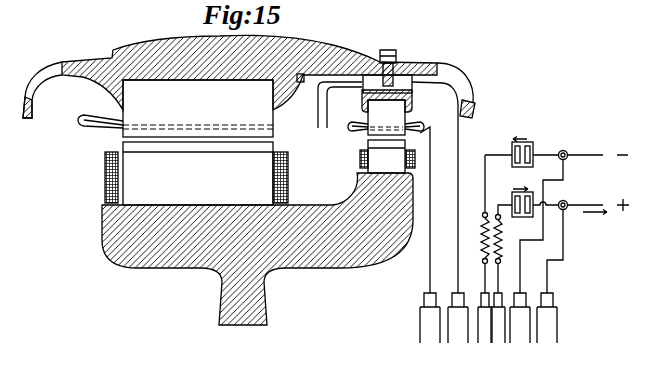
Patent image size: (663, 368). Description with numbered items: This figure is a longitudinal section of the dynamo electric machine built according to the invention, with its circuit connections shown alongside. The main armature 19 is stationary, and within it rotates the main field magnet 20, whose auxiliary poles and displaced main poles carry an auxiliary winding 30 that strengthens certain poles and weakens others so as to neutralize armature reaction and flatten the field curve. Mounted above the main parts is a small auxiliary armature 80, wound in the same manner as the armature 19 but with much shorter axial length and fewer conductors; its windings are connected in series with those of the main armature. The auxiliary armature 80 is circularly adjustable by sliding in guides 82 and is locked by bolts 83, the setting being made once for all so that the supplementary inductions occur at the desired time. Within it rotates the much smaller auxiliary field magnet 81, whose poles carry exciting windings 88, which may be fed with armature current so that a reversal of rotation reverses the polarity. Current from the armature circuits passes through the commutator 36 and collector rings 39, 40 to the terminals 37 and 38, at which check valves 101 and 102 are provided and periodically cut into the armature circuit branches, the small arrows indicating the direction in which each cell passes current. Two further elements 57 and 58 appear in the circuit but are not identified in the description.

The armature 19 is at (198, 108).
The field magnet 20 is at (198, 173).
The auxiliary winding 30 is at (110, 168).
The commutator 36 is at (430, 332).
The terminal 37 is at (567, 151).
The terminal 38 is at (567, 202).
The collector ring 39 is at (522, 333).
The collector ring 40 is at (548, 333).
The resistance coil 57 is at (483, 233).
The resistance coil 58 is at (503, 222).
The auxiliary armature 80 is at (386, 117).
The auxiliary field magnet 81 is at (386, 156).
The guides 82 is at (407, 101).
The bolts 83 is at (397, 59).
The exciting windings 88 is at (361, 160).
The check valve 101 is at (528, 143).
The check valve 102 is at (534, 196).